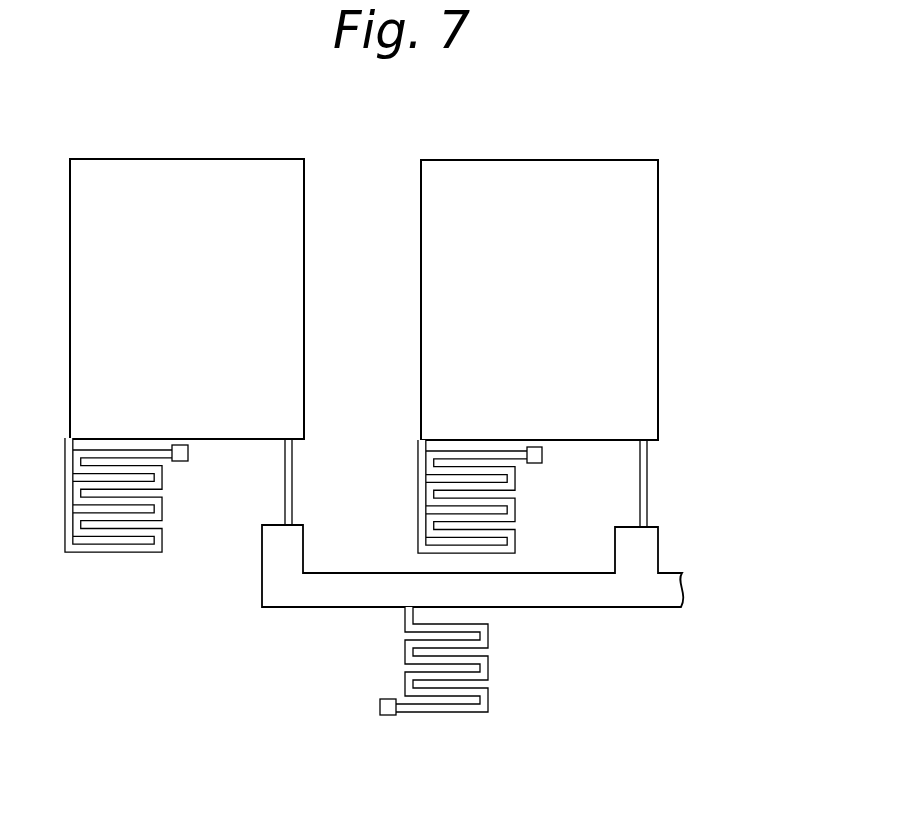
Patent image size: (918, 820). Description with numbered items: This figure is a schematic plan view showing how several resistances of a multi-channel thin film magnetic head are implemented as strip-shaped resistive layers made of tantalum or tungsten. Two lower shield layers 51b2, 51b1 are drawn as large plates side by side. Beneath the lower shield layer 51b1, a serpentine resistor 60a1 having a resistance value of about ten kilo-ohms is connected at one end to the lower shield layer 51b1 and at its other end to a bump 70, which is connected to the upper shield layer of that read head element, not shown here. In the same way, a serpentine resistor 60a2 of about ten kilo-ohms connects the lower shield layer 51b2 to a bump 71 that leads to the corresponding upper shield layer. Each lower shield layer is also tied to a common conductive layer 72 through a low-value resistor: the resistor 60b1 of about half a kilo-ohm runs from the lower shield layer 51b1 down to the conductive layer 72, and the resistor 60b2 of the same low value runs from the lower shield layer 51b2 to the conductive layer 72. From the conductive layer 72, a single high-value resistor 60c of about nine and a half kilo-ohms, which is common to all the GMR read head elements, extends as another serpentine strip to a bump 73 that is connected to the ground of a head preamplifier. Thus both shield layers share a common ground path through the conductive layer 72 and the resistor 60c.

The lower shield layer 51b2 is at (262, 173).
The lower shield layer 51b1 is at (613, 175).
The resistor 60a1 is at (396, 501).
The resistor 60a2 is at (122, 562).
The resistor 60b1 is at (643, 480).
The resistor 60b2 is at (287, 497).
The resistor 60c is at (487, 667).
The bump 70 is at (534, 463).
The bump 71 is at (179, 461).
The conductive layer 72 is at (285, 593).
The bump 73 is at (390, 715).